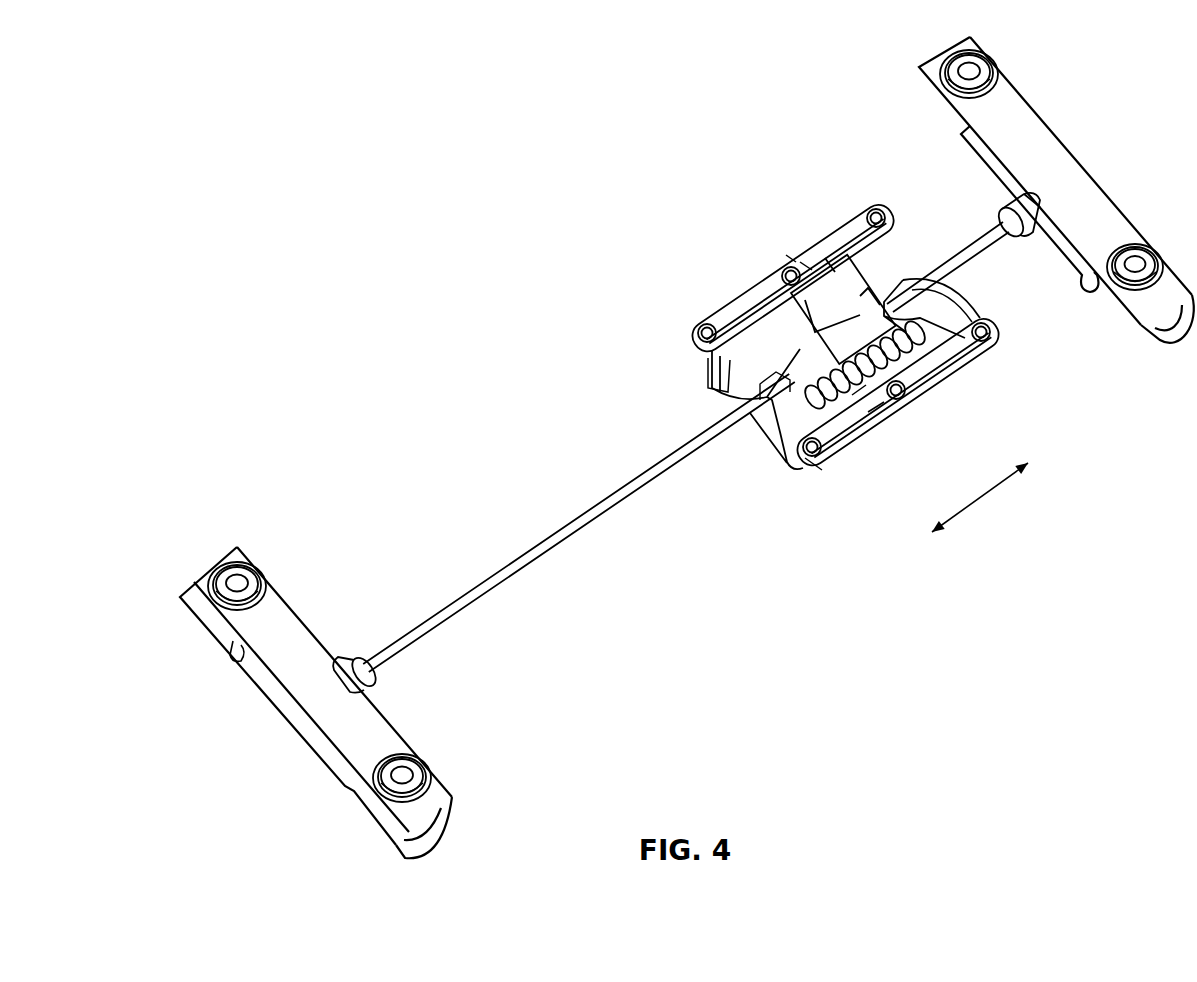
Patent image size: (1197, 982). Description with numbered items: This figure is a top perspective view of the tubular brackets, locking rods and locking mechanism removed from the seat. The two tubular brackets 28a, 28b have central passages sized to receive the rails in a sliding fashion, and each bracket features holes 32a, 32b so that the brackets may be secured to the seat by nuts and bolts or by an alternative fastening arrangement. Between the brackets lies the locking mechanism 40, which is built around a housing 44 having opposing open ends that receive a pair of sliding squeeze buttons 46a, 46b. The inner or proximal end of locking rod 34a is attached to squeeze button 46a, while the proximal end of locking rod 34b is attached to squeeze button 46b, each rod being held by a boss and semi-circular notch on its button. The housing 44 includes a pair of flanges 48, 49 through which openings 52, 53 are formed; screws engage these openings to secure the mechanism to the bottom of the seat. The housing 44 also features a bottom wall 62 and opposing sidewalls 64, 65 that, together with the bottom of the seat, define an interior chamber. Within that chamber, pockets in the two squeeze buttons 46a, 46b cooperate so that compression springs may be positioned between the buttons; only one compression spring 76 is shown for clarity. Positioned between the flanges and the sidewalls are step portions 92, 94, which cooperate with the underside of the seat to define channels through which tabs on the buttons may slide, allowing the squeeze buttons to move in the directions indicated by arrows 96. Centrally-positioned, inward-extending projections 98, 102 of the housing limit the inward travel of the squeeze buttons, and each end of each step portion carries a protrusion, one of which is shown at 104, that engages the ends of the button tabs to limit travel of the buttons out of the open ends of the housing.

The tubular bracket 28a is at (1082, 165).
The tubular bracket 28b is at (298, 728).
The hole 32a is at (1113, 300).
The hole 32b is at (405, 766).
The locking rod 34a is at (985, 236).
The locking rod 34b is at (580, 518).
The locking mechanism 40 is at (738, 206).
The housing 44 is at (913, 450).
The squeeze button 46a is at (960, 304).
The squeeze button 46b is at (780, 441).
The flange 48 is at (991, 345).
The flange 49 is at (853, 217).
The opening 52 is at (817, 466).
The opening 53 is at (700, 332).
The bottom wall 62 is at (820, 340).
The sidewall 64 is at (876, 423).
The sidewall 65 is at (793, 258).
The compression spring 76 is at (940, 371).
The step portion 92 is at (875, 400).
The step portion 94 is at (797, 262).
The arrows 96 is at (972, 508).
The projection 98 is at (912, 394).
The projection 102 is at (786, 279).
The protrusion 104 is at (893, 223).